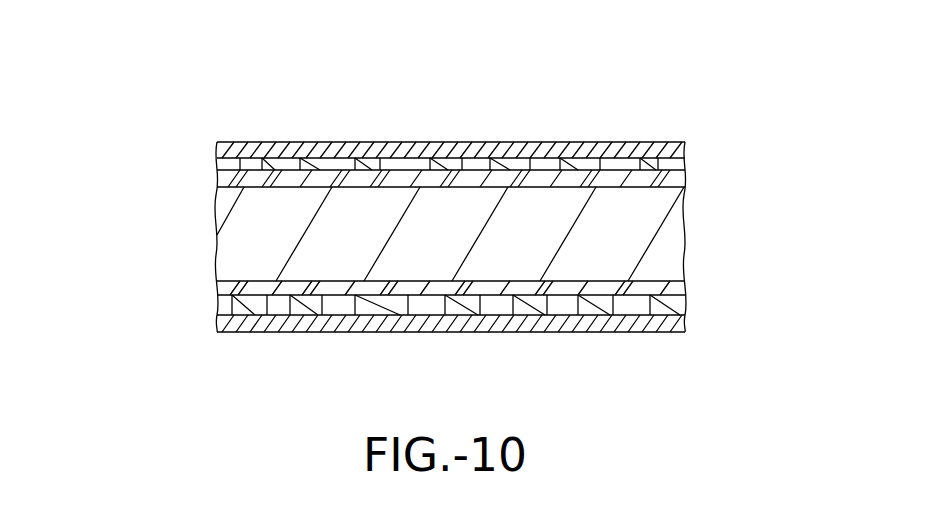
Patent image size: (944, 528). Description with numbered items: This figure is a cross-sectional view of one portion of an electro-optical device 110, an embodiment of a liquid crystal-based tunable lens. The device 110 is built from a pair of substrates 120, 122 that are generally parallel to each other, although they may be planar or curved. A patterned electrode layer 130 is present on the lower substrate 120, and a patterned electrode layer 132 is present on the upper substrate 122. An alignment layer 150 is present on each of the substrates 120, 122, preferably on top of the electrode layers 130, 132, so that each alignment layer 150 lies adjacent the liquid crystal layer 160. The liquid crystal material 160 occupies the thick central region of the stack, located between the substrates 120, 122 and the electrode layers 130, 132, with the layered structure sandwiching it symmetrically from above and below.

The electro-optical device 110 is at (266, 128).
The lower substrate 120 is at (688, 327).
The upper substrate 122 is at (683, 142).
The electrode layer 130 is at (217, 303).
The electrode layer 132 is at (220, 165).
The alignment layer 150 is at (685, 178).
The liquid crystal layer 160 is at (668, 233).